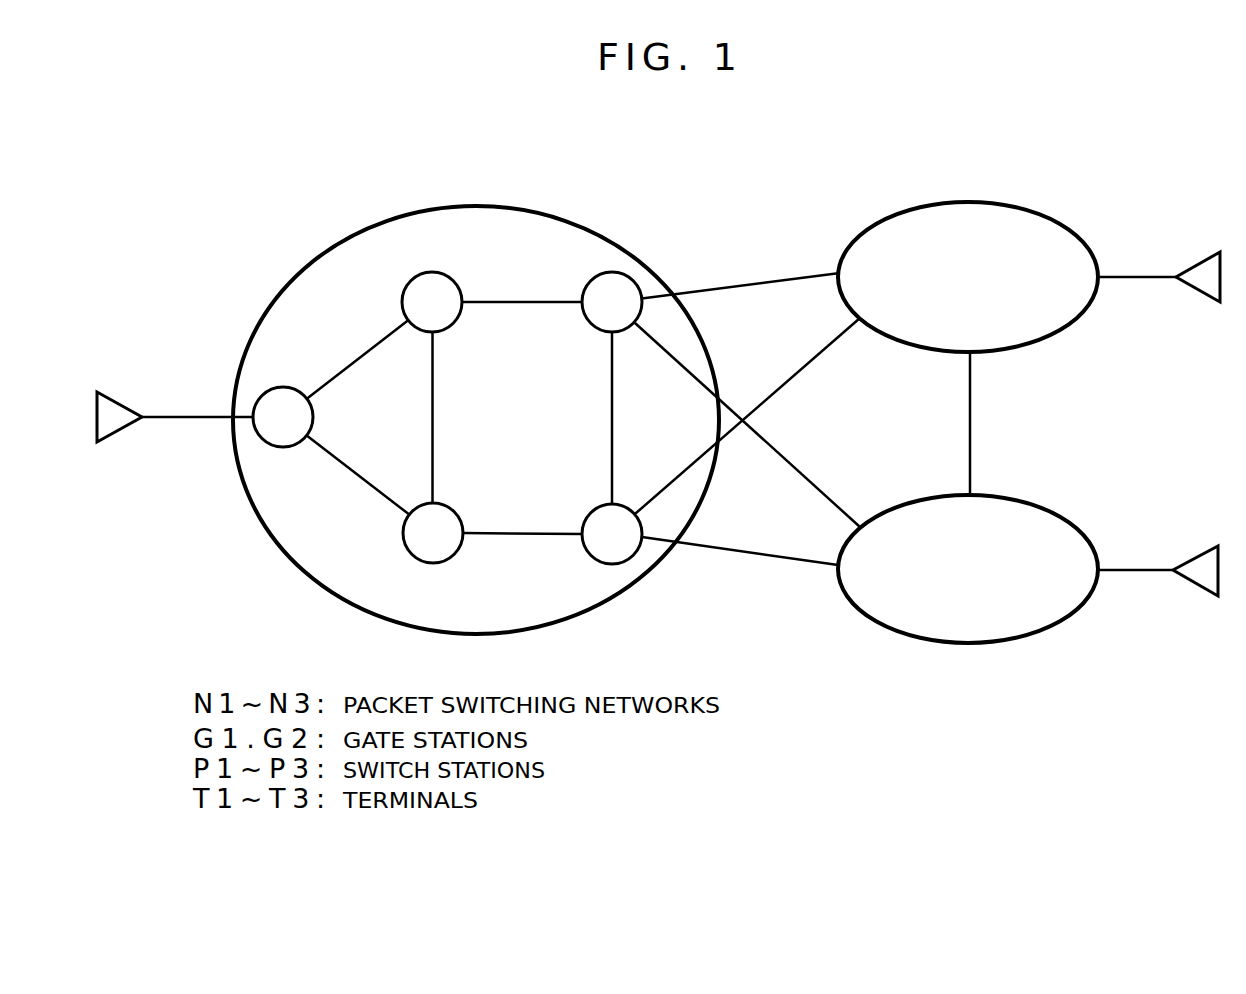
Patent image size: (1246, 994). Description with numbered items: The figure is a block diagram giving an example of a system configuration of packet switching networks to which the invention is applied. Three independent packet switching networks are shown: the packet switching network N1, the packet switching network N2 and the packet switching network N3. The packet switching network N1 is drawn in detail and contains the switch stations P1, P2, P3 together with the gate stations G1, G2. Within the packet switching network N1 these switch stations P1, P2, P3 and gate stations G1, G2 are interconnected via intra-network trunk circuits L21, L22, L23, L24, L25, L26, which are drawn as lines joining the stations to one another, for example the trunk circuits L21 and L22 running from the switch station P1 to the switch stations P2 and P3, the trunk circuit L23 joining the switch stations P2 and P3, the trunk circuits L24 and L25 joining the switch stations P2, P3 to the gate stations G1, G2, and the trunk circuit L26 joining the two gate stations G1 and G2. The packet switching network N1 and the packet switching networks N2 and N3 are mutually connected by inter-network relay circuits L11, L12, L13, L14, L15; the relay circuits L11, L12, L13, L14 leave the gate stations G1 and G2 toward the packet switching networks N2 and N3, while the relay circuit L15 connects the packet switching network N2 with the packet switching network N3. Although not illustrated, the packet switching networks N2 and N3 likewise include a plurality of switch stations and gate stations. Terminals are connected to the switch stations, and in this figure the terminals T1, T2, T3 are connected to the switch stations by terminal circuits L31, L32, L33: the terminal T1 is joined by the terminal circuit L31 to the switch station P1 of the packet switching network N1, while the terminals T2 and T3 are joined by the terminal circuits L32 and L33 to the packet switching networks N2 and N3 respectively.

The packet switching network N1 is at (476, 399).
The packet switching network N2 is at (968, 277).
The packet switching network N3 is at (968, 569).
The gate station G1 is at (612, 302).
The gate station G2 is at (612, 534).
The switch station P1 is at (283, 417).
The switch station P2 is at (432, 302).
The switch station P3 is at (433, 533).
The terminal T1 is at (119, 395).
The terminal T2 is at (1200, 260).
The terminal T3 is at (1198, 552).
The inter-network relay circuit L11 is at (741, 273).
The inter-network relay circuit L12 is at (747, 425).
The inter-network relay circuit L13 is at (747, 416).
The inter-network relay circuit L14 is at (740, 545).
The inter-network relay circuit L15 is at (995, 423).
The intra-network trunk circuit L21 is at (357, 359).
The intra-network trunk circuit L22 is at (358, 474).
The intra-network trunk circuit L23 is at (459, 417).
The intra-network trunk circuit L24 is at (522, 285).
The intra-network trunk circuit L25 is at (522, 521).
The intra-network trunk circuit L26 is at (583, 418).
The terminal circuit L31 is at (197, 400).
The terminal circuit L32 is at (1137, 263).
The terminal circuit L33 is at (1135, 552).